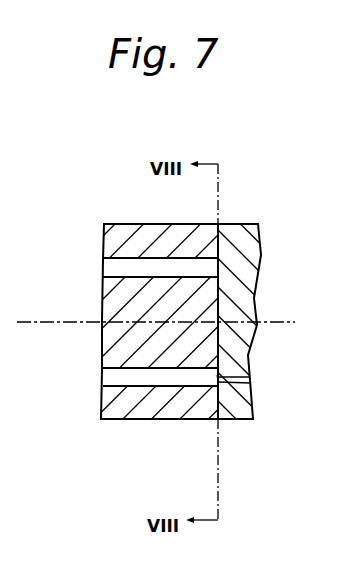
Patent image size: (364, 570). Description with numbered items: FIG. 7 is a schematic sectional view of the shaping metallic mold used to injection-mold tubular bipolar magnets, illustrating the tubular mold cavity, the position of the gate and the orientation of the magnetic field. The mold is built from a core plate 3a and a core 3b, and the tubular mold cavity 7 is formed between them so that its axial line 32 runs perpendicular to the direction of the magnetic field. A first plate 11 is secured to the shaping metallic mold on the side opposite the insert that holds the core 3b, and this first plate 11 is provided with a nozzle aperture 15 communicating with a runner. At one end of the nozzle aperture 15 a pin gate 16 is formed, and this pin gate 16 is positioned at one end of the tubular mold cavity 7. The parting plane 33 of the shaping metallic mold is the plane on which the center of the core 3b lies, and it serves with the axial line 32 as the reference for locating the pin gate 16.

The first plate 11 is at (246, 224).
The tubular mold cavity 7 is at (104, 266).
The core 3b is at (103, 320).
The core plate 3a is at (103, 412).
The nozzle aperture 15 is at (250, 378).
The pin gate 16 is at (217, 377).
The axial line 32 is at (37, 323).
The parting plane 33 is at (218, 468).